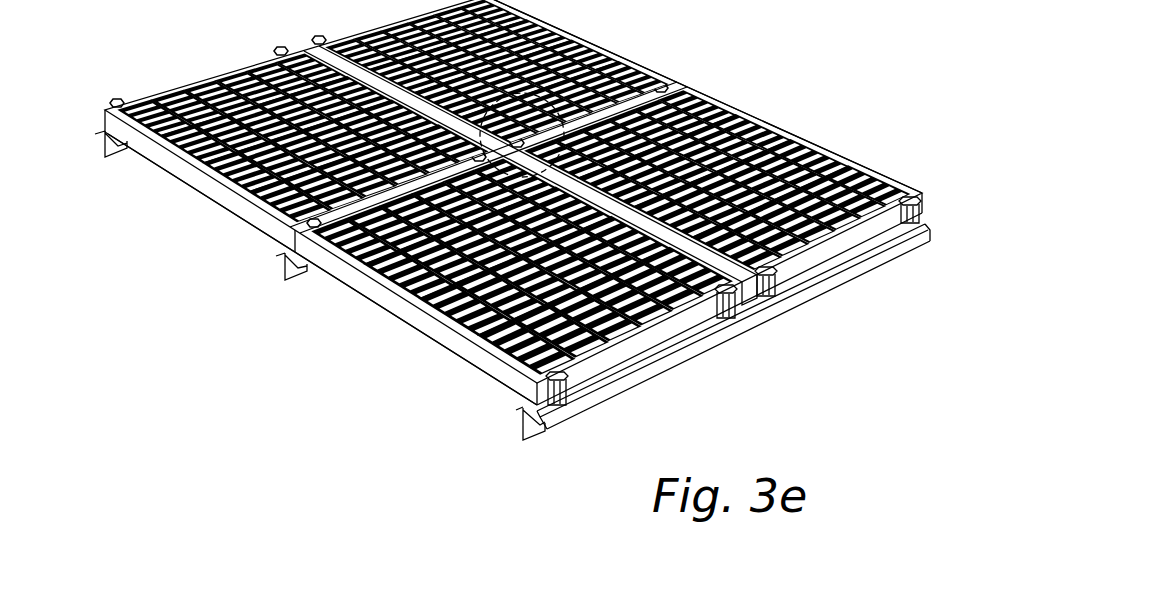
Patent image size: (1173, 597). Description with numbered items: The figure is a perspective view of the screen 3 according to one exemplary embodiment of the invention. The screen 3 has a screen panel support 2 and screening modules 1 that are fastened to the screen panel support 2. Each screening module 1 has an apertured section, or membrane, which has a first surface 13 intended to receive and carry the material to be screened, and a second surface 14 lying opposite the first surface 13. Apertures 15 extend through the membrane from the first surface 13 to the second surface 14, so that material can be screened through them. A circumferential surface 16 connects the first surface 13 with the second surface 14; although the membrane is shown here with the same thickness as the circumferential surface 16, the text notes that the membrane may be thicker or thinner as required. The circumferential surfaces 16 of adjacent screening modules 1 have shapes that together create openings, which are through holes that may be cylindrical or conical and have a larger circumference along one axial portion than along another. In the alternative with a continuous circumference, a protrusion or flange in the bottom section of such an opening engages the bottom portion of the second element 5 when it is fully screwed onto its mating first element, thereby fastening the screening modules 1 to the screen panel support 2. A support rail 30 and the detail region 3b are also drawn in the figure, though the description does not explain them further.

The screen 3 is at (541, 259).
The screening module 1 is at (532, 202).
The apertures 15 is at (852, 164).
The first surface 13 is at (900, 192).
The second element 5 is at (926, 218).
The support rail 30 is at (820, 284).
The circumferential surface 16 is at (377, 293).
The second surface 14 is at (400, 324).
The screen panel support 2 is at (524, 440).
The detail region 3b is at (378, 23).